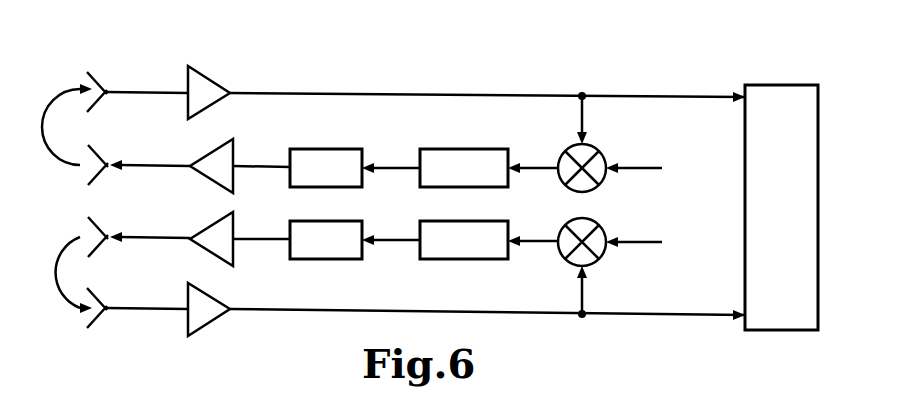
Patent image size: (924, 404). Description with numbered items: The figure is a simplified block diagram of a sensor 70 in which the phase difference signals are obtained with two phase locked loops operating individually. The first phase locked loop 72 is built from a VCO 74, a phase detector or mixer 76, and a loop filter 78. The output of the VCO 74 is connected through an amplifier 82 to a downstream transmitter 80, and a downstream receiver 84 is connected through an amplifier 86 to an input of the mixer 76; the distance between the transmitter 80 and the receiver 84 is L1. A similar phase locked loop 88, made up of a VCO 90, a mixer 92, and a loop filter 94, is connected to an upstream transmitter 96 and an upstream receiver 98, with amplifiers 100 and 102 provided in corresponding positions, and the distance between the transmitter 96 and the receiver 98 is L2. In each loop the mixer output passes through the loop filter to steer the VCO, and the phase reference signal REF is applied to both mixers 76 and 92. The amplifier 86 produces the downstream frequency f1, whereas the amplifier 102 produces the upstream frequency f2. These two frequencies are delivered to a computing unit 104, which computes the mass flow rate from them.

The sensor 70 is at (155, 52).
The first phase locked loop 72 is at (520, 61).
The VCO 74 is at (322, 149).
The mixer 76 is at (600, 152).
The loop filter 78 is at (462, 149).
The downstream transmitter 80 is at (98, 147).
The amplifier 82 is at (235, 147).
The downstream receiver 84 is at (93, 70).
The amplifier 86 is at (212, 72).
The phase locked loop 88 is at (522, 334).
The VCO 90 is at (322, 259).
The mixer 92 is at (600, 258).
The loop filter 94 is at (466, 259).
The upstream transmitter 96 is at (97, 247).
The upstream receiver 98 is at (96, 323).
The amplifier 100 is at (207, 225).
The amplifier 102 is at (203, 330).
The computing unit 104 is at (775, 85).